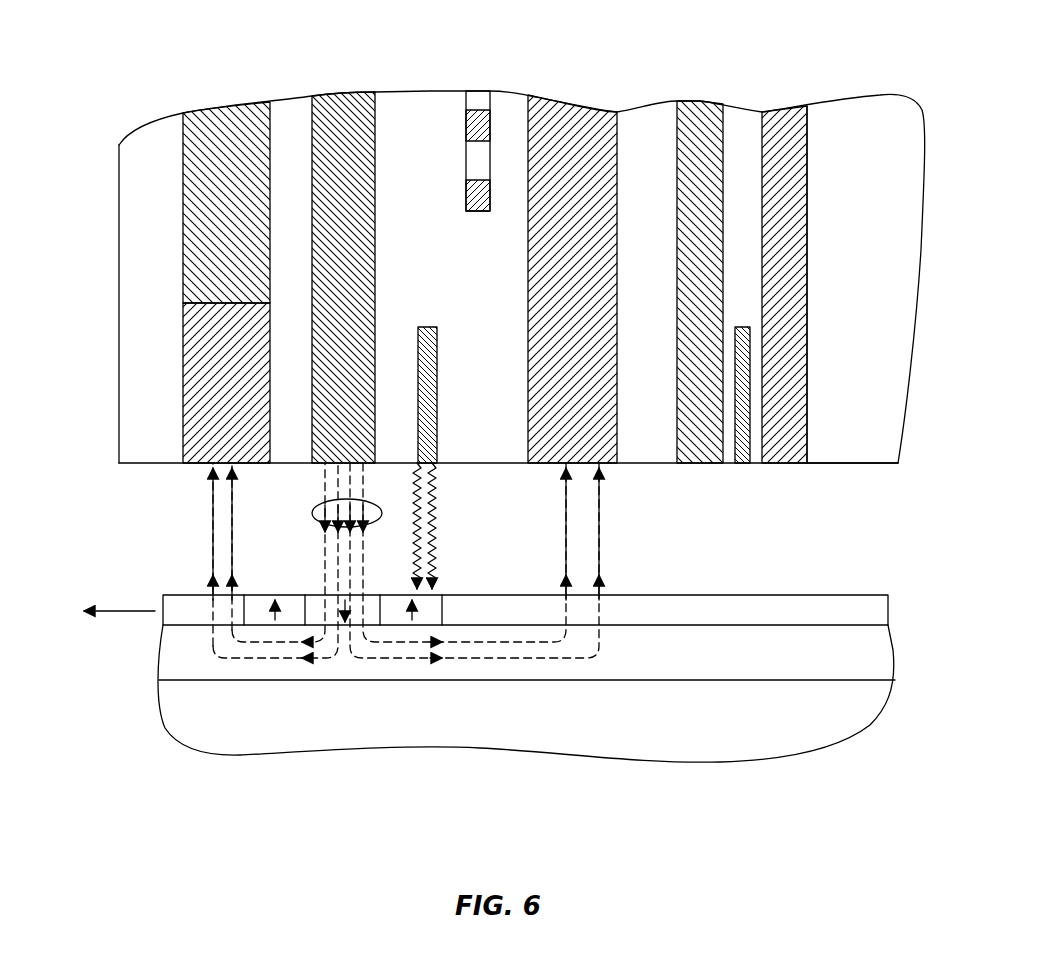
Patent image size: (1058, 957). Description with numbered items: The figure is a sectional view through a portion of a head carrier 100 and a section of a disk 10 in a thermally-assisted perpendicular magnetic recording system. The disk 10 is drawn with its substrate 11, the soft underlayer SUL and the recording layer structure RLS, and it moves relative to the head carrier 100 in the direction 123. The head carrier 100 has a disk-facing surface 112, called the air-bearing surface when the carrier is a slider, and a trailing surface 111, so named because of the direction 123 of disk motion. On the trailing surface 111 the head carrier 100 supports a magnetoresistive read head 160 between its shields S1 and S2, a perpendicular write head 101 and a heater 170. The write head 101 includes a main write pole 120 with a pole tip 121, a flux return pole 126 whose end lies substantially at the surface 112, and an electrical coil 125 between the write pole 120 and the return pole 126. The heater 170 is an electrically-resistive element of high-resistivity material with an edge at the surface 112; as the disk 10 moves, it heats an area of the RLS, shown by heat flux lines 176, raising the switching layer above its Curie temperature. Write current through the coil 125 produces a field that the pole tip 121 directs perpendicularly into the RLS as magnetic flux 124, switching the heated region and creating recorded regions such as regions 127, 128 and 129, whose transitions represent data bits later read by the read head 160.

The head carrier 100 is at (144, 58).
The perpendicular write head 101 is at (617, 92).
The disk 10 is at (143, 784).
The substrate 11 is at (882, 712).
The trailing surface 111 is at (807, 172).
The disk-facing surface 112 is at (148, 464).
The write pole 120 is at (378, 265).
The pole tip 121 is at (320, 465).
The direction 123 is at (118, 611).
The magnetic flux 124 is at (383, 511).
The electrical coil 125 is at (466, 122).
The flux return pole 126 is at (528, 300).
The recorded region 127 is at (257, 595).
The recorded region 128 is at (355, 595).
The recorded region 129 is at (440, 595).
The magnetoresistive read head 160 is at (745, 464).
The heater 170 is at (438, 395).
The heat flux lines 176 is at (433, 535).
The shield S1 is at (783, 464).
The shield S2 is at (700, 464).